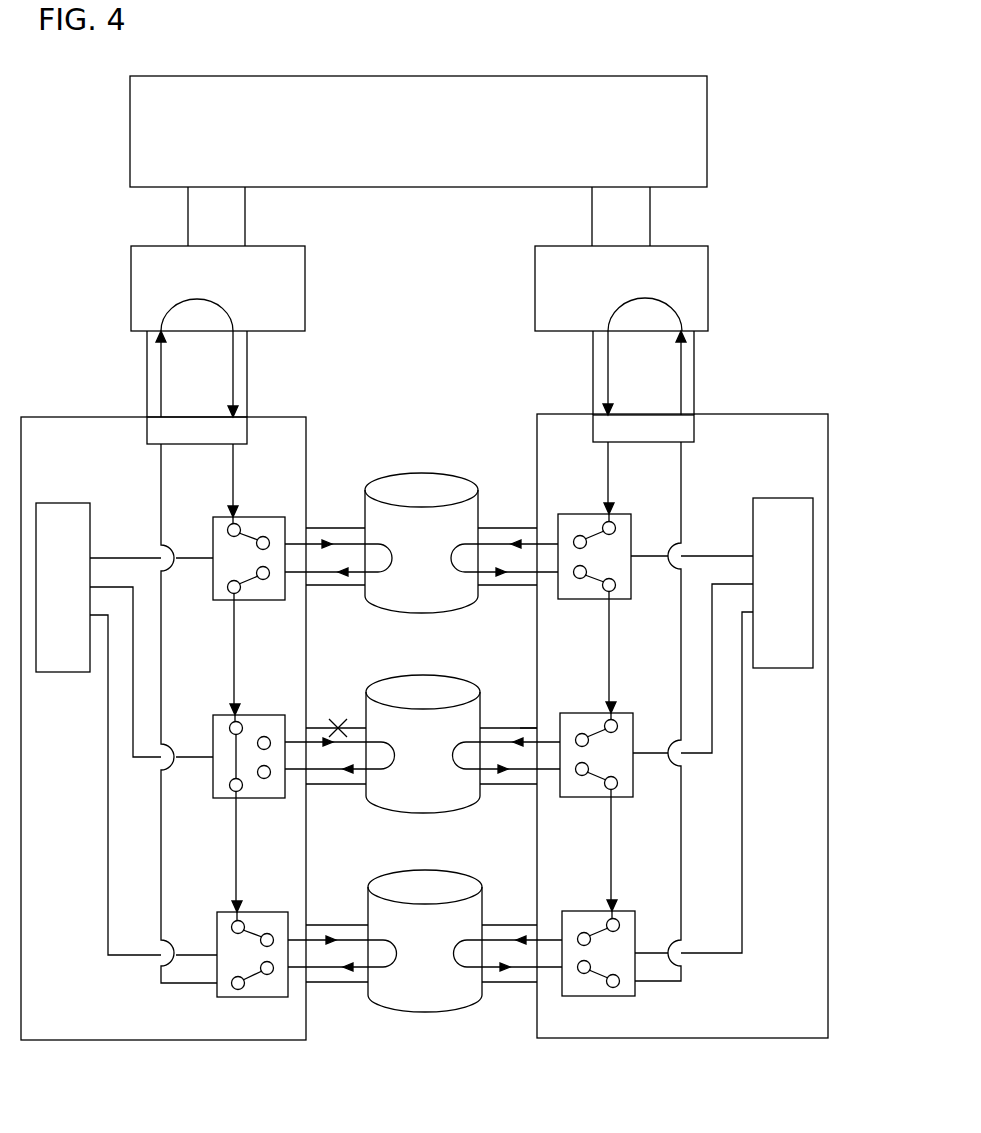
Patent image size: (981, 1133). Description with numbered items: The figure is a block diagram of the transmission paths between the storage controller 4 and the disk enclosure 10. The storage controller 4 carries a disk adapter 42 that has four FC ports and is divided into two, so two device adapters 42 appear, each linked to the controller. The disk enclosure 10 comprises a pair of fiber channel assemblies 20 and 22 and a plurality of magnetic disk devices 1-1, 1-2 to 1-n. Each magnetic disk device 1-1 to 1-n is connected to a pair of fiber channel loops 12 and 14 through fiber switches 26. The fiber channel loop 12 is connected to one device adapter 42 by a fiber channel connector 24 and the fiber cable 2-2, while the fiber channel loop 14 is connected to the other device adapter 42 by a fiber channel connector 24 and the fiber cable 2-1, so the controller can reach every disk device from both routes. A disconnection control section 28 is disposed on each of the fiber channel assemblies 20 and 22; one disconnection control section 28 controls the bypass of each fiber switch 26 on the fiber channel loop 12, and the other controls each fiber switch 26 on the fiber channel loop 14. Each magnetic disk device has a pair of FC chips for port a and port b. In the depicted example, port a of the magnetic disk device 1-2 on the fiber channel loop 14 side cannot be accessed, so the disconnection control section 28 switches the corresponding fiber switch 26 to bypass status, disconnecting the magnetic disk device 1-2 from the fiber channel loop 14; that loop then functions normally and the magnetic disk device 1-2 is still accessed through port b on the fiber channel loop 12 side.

The storage controller 4 is at (707, 118).
The disk adapter 42 is at (131, 290).
The fiber cable 2-1 is at (147, 379).
The fiber cable 2-2 is at (593, 363).
The fiber channel assembly 22 is at (275, 417).
The fiber channel assembly 20 is at (562, 414).
The fiber channel connector 24 is at (242, 431).
The fiber switch 26 is at (287, 598).
The disconnection control section 28 is at (70, 672).
The magnetic disk device 1-1 is at (427, 473).
The magnetic disk device 1-2 is at (422, 724).
The magnetic disk device 1-n is at (435, 873).
The disk enclosure 10 is at (801, 370).
The fiber channel loop 12 is at (688, 975).
The fiber channel loop 14 is at (166, 979).
The port a is at (337, 717).
The port b is at (520, 715).